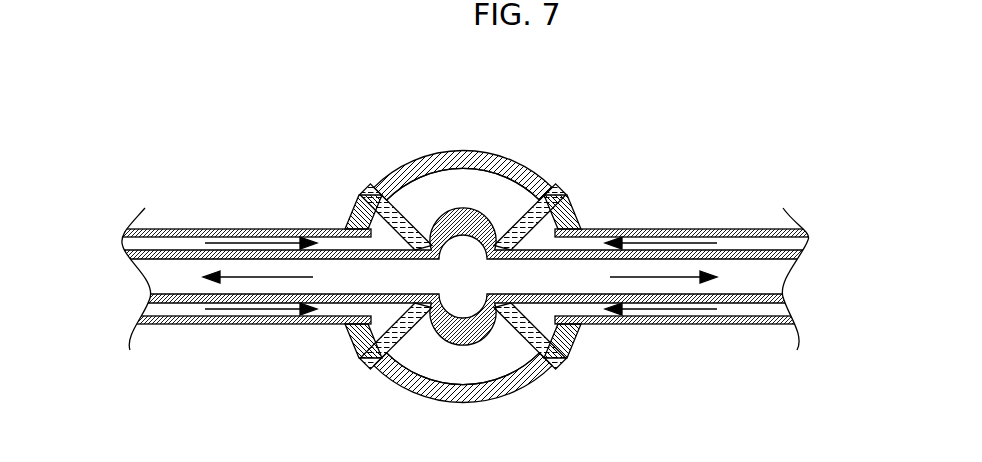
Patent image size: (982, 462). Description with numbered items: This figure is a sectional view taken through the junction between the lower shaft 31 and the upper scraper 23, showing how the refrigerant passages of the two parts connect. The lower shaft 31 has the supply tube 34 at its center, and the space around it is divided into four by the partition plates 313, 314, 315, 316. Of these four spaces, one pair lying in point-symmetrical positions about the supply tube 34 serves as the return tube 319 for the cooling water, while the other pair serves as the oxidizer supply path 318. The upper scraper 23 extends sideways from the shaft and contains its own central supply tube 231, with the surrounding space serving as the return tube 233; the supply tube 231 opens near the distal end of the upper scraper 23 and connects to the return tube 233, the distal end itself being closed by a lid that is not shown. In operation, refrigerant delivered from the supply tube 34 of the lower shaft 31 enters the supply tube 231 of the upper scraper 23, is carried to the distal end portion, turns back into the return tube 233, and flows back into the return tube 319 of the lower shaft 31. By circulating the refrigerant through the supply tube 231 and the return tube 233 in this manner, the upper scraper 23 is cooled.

The upper scraper 23 is at (465, 272).
The supply tube 231 is at (152, 305).
The return tube 233 is at (224, 250).
The lower shaft 31 is at (488, 167).
The supply tube 34 is at (468, 379).
The partition plate 313 is at (563, 368).
The partition plate 314 is at (364, 366).
The partition plate 315 is at (365, 188).
The partition plate 316 is at (560, 184).
The oxidizer supply path 318 is at (445, 188).
The return tube 319 is at (356, 218).